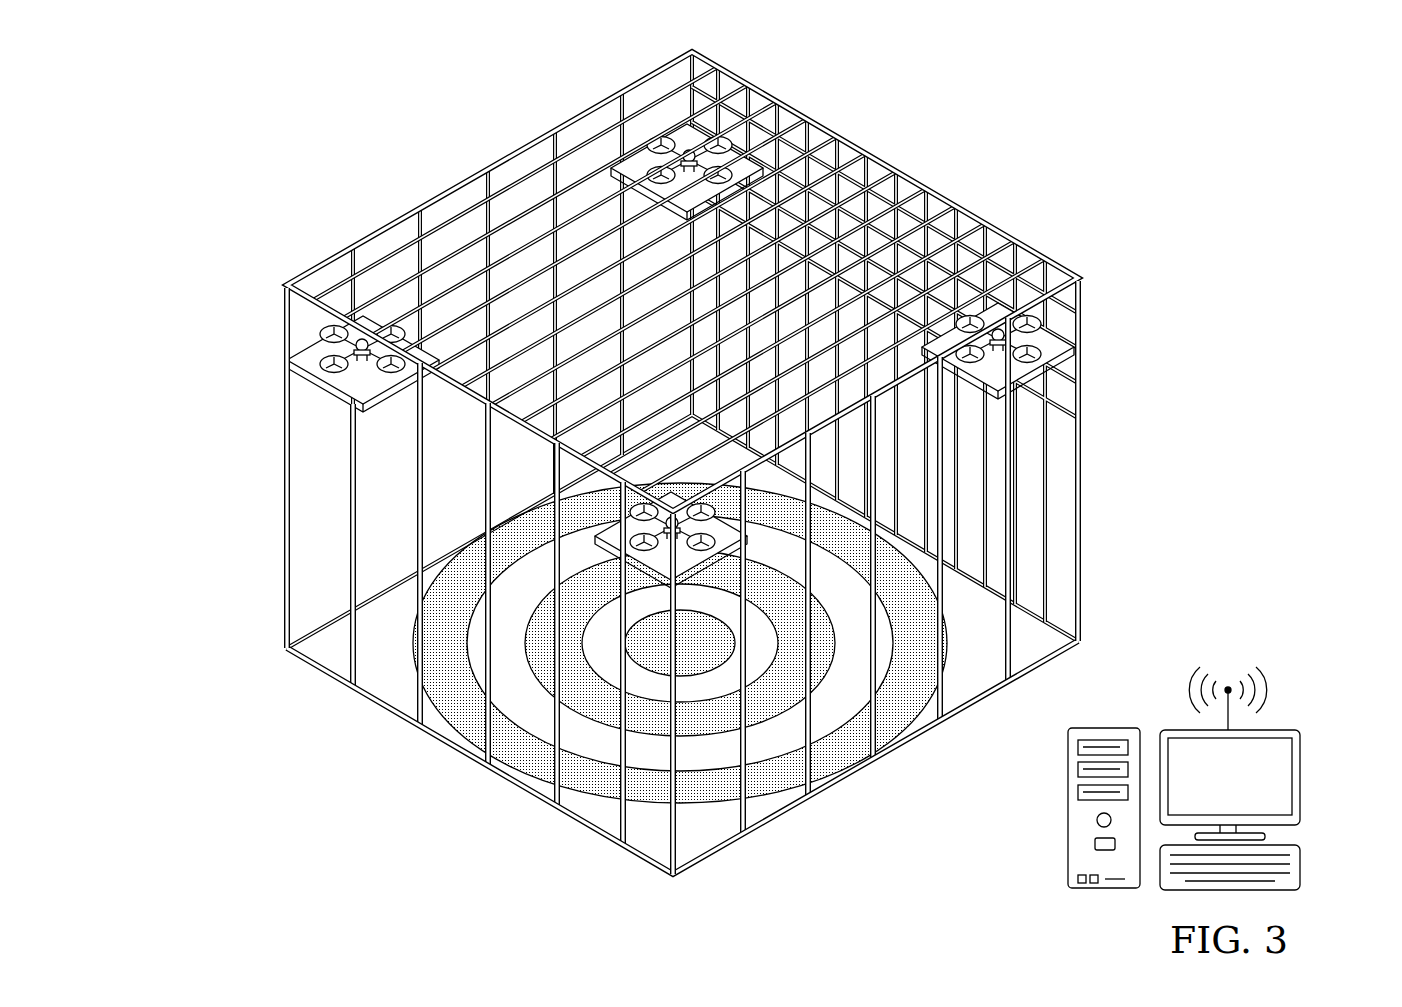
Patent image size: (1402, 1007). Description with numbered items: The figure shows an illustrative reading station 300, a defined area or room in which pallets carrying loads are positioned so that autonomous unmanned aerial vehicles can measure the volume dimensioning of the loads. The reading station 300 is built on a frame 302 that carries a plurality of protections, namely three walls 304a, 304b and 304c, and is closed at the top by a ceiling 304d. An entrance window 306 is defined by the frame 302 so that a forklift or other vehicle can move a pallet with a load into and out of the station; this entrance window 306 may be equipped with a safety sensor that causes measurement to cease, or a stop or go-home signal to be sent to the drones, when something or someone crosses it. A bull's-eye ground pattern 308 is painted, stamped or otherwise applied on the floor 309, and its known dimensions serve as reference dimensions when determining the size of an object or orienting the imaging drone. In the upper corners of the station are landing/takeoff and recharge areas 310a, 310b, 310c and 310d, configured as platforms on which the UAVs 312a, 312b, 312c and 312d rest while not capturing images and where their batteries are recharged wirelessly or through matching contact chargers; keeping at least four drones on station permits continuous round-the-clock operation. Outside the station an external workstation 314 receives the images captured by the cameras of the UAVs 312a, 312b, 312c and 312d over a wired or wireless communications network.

The reading station 300 is at (410, 100).
The frame 302 is at (600, 490).
The wall 304a is at (670, 845).
The wall 304b is at (1047, 480).
The wall 304c is at (417, 508).
The ceiling 304d is at (460, 213).
The entrance window 306 is at (640, 818).
The ground pattern 308 is at (427, 675).
The floor 309 is at (322, 657).
The landing/takeoff and recharge area 310a is at (300, 378).
The landing/takeoff and recharge area 310b is at (683, 137).
The landing/takeoff and recharge area 310c is at (1050, 343).
The landing/takeoff and recharge area 310d is at (660, 560).
The UAV 312a is at (315, 320).
The UAV 312b is at (740, 150).
The UAV 312c is at (1060, 363).
The UAV 312d is at (615, 535).
The external workstation 314 is at (1333, 790).